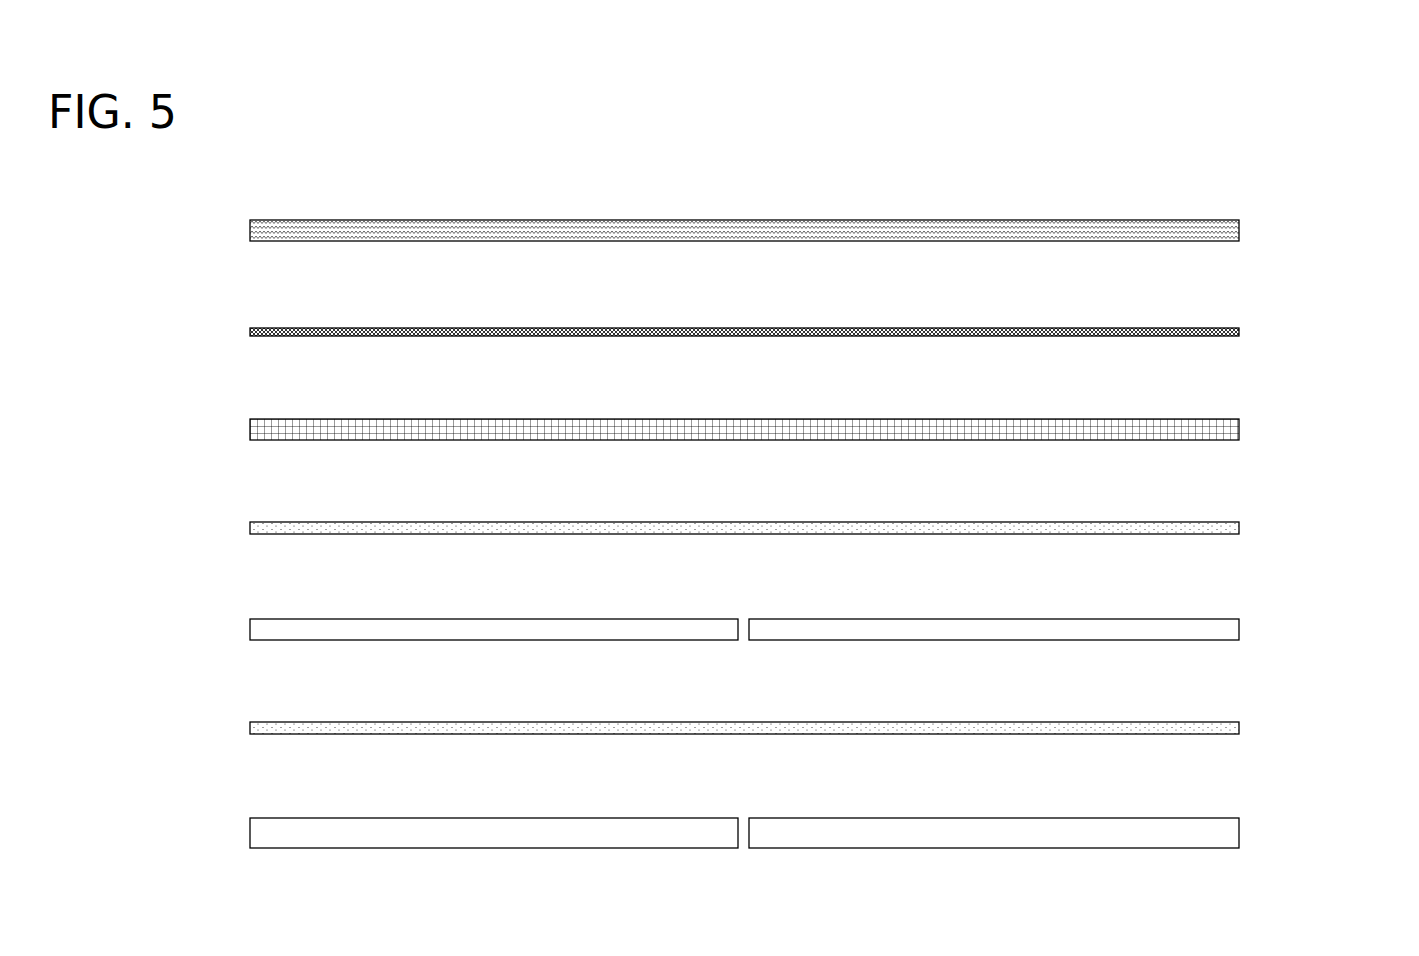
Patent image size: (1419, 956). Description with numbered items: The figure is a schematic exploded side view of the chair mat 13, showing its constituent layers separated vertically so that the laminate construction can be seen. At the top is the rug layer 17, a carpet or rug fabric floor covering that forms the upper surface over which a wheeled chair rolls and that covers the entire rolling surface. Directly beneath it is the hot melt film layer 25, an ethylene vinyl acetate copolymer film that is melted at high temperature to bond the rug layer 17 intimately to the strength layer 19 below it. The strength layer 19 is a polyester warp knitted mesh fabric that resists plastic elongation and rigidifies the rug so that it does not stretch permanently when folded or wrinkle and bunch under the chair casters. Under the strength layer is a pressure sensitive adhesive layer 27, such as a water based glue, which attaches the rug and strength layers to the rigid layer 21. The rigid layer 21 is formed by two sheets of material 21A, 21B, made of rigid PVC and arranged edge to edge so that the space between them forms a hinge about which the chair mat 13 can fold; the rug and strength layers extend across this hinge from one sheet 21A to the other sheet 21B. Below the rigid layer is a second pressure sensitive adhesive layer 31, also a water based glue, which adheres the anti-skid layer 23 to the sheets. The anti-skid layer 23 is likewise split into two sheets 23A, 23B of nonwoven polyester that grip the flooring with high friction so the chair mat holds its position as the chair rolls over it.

The chair mat 13 is at (1380, 158).
The rug layer 17 is at (1240, 232).
The hot melt film layer 25 is at (248, 332).
The strength layer 19 is at (1240, 432).
The pressure sensitive adhesive layer 27 is at (250, 530).
The rigid layer 21 is at (776, 592).
The sheet of material 21A is at (498, 619).
The sheet of material 21B is at (980, 619).
The pressure sensitive adhesive layer 31 is at (250, 732).
The anti-skid layer 23 is at (797, 862).
The anti-skid layer sheet 23A is at (497, 848).
The anti-skid layer sheet 23B is at (985, 848).